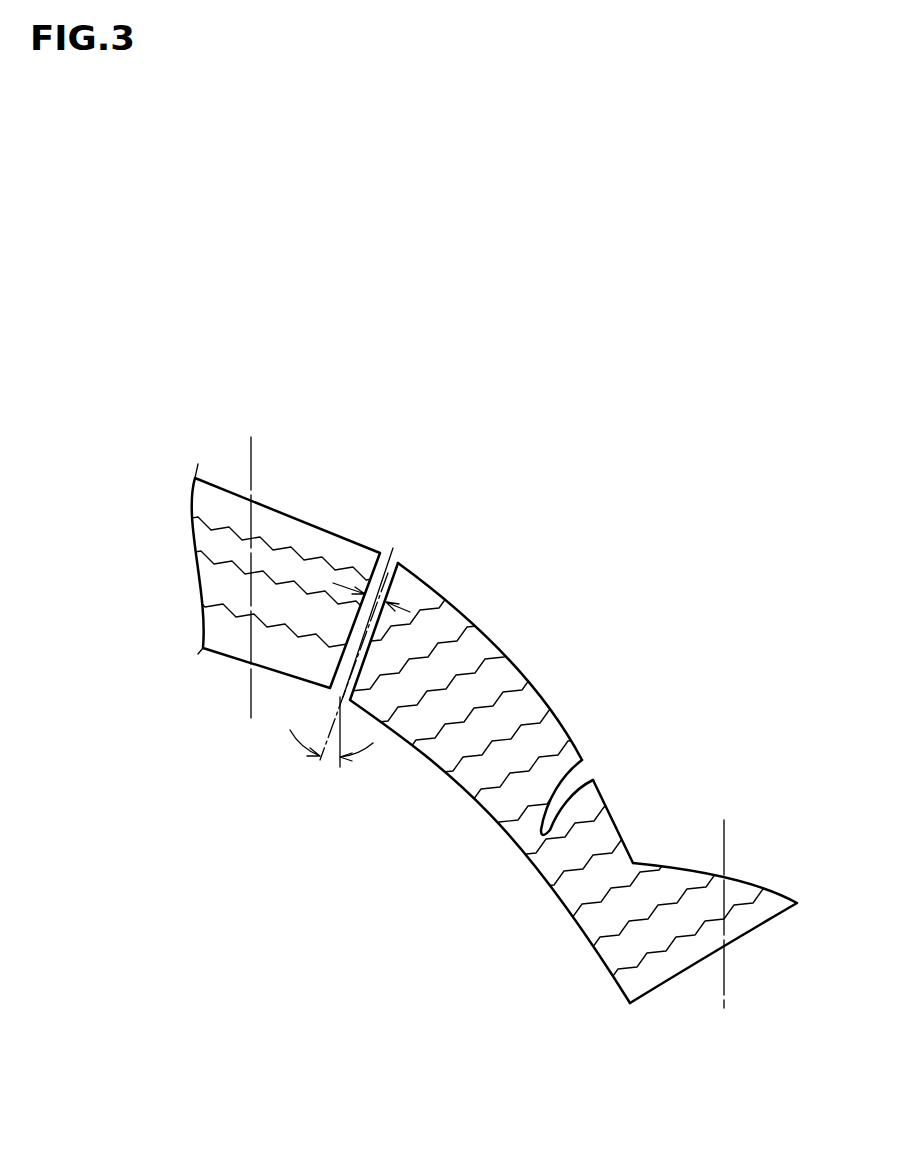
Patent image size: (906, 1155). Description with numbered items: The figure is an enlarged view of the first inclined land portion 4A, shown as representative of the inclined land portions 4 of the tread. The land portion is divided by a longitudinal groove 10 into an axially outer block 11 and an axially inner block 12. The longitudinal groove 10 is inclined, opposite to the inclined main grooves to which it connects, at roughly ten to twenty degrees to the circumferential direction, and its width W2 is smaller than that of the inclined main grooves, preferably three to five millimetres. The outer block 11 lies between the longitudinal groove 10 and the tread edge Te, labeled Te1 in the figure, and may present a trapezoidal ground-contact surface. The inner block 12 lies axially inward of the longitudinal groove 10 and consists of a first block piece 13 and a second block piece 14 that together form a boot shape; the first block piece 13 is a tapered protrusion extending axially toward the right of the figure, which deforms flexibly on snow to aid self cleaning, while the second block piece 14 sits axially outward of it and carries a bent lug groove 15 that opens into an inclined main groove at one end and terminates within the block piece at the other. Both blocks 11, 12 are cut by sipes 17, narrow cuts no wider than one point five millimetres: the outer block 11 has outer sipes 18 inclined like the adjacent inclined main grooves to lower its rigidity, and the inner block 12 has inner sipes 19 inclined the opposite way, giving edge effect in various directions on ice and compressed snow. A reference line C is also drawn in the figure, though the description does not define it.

The inclined land portion 4 is at (466, 747).
The first inclined land portion 4A is at (693, 482).
The longitudinal groove 10 is at (357, 655).
The outer block 11 is at (302, 578).
The inner block 12 is at (742, 538).
The first block piece 13 is at (685, 918).
The second block piece 14 is at (507, 717).
The lug groove 15 is at (555, 802).
The sipes 17 is at (466, 747).
The outer sipes 18 is at (287, 547).
The inner sipes 19 is at (623, 930).
The width of the longitudinal groove W2 is at (378, 603).
The tread edge Te is at (256, 561).
The tread edge Te1 is at (256, 561).
The tire equator C is at (724, 897).